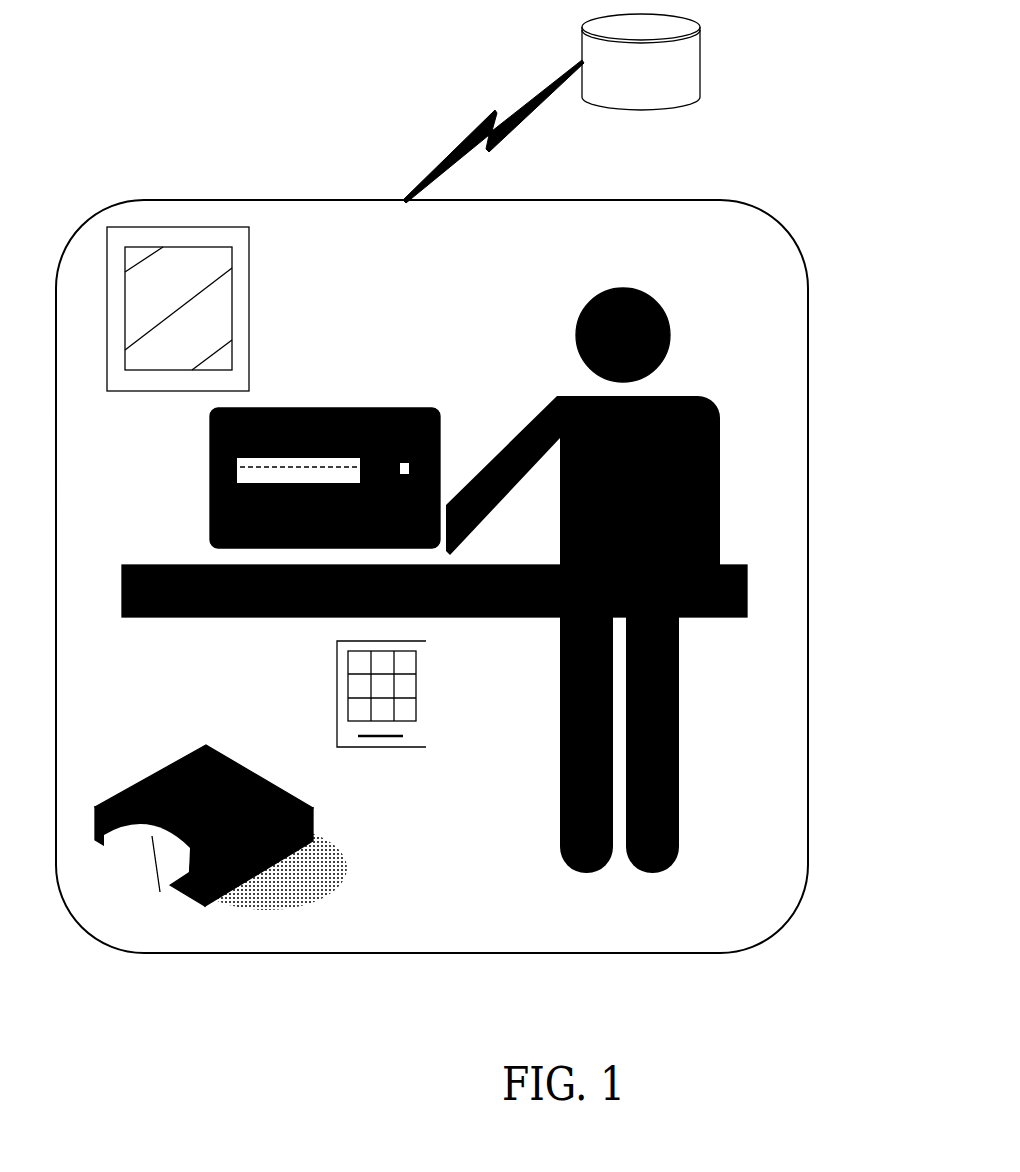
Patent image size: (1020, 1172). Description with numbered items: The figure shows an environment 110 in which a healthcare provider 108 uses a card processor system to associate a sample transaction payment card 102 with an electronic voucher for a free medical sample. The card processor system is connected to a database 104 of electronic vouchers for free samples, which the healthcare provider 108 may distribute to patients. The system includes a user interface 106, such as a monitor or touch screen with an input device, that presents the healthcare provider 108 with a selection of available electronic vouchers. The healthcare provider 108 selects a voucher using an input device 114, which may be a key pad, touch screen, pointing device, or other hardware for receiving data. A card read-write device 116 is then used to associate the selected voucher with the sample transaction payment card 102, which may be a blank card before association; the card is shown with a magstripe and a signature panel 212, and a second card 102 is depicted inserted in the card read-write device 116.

The environment 110 is at (266, 158).
The database 104 is at (642, 107).
The user interface 106 is at (248, 273).
The healthcare provider 108 is at (665, 312).
The sample transaction payment card 102 is at (268, 627).
The signature panel 212 is at (243, 508).
The input device 114 is at (422, 703).
The card read-write device 116 is at (280, 807).